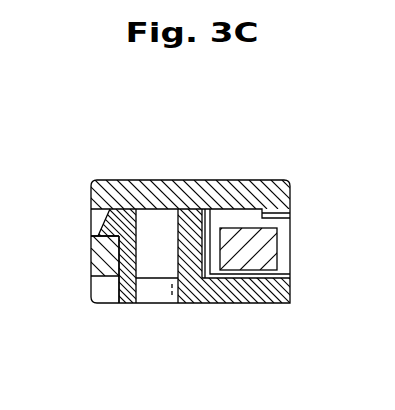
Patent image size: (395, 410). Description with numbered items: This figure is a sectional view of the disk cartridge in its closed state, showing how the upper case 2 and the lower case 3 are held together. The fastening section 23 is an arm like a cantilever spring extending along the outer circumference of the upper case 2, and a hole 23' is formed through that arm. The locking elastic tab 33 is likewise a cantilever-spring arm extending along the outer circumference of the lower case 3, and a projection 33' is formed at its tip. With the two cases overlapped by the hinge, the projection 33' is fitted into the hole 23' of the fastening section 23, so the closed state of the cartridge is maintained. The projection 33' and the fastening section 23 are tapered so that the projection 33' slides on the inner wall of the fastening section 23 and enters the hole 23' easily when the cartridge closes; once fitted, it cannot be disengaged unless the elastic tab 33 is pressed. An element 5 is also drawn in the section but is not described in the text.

The upper case 2 is at (264, 195).
The lower case 3 is at (245, 282).
The inner member 5 is at (270, 254).
The fastening section 23 is at (91, 286).
The hole 23' is at (73, 200).
The locking elastic tab 33 is at (114, 299).
The projection 33' is at (150, 204).